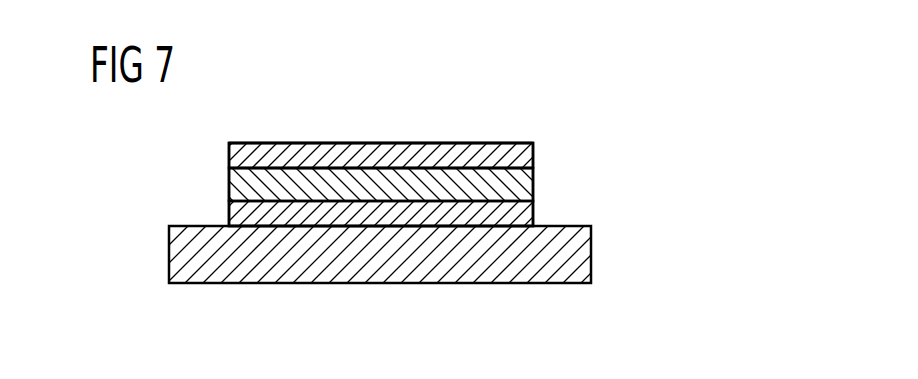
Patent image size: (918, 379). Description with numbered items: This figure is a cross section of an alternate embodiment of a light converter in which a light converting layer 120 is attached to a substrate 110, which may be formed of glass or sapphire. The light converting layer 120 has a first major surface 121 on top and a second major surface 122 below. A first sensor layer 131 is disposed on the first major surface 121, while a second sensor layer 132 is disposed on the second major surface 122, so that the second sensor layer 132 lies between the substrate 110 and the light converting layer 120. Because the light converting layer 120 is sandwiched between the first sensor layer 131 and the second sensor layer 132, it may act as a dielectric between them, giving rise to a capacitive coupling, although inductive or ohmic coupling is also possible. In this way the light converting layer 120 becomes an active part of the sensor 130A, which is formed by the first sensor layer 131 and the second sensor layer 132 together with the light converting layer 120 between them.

The substrate 110 is at (583, 257).
The light converting layer 120 is at (522, 186).
The first major surface 121 is at (527, 156).
The second major surface 122 is at (350, 195).
The sensor 130A is at (160, 143).
The first sensor layer 131 is at (229, 156).
The second sensor layer 132 is at (229, 215).